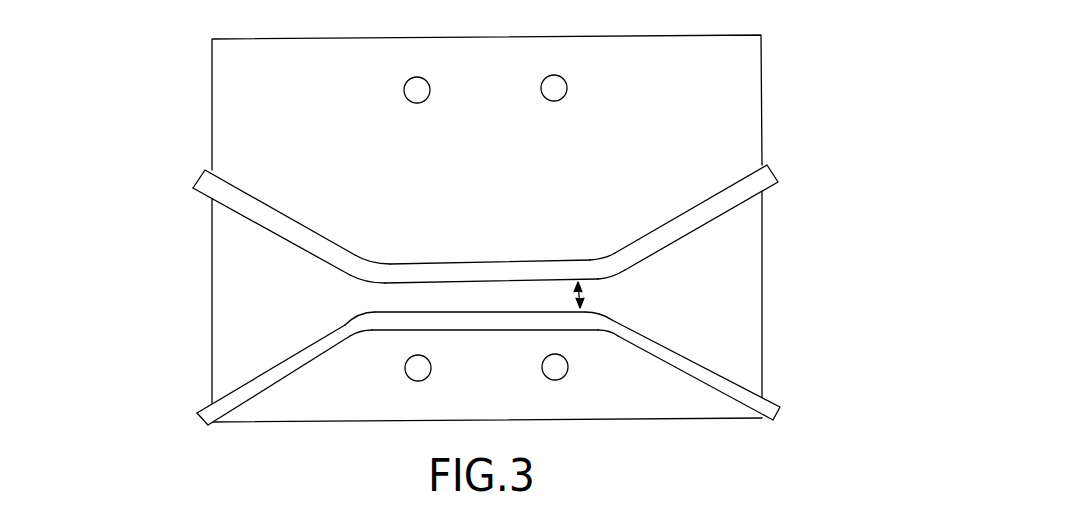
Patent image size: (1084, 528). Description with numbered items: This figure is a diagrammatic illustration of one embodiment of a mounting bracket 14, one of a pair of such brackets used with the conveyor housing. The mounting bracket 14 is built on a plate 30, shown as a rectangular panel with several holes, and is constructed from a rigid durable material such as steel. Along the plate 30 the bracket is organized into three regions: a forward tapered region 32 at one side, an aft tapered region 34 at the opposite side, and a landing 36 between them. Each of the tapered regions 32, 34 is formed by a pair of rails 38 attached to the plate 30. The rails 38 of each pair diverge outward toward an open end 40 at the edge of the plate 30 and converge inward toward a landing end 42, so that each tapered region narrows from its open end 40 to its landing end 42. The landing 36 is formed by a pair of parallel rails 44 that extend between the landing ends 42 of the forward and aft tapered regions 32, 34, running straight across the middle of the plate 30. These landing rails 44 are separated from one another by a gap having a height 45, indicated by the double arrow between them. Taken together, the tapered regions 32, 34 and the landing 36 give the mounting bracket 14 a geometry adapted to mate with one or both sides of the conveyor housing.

The mounting bracket 14 is at (479, 230).
The plate 30 is at (479, 228).
The forward tapered region 32 is at (777, 240).
The aft tapered region 34 is at (204, 290).
The landing 36 is at (486, 285).
The rails 38 is at (258, 207).
The open end 40 is at (213, 382).
The landing end 42 is at (350, 295).
The parallel rails 44 is at (532, 268).
The height 45 is at (583, 304).